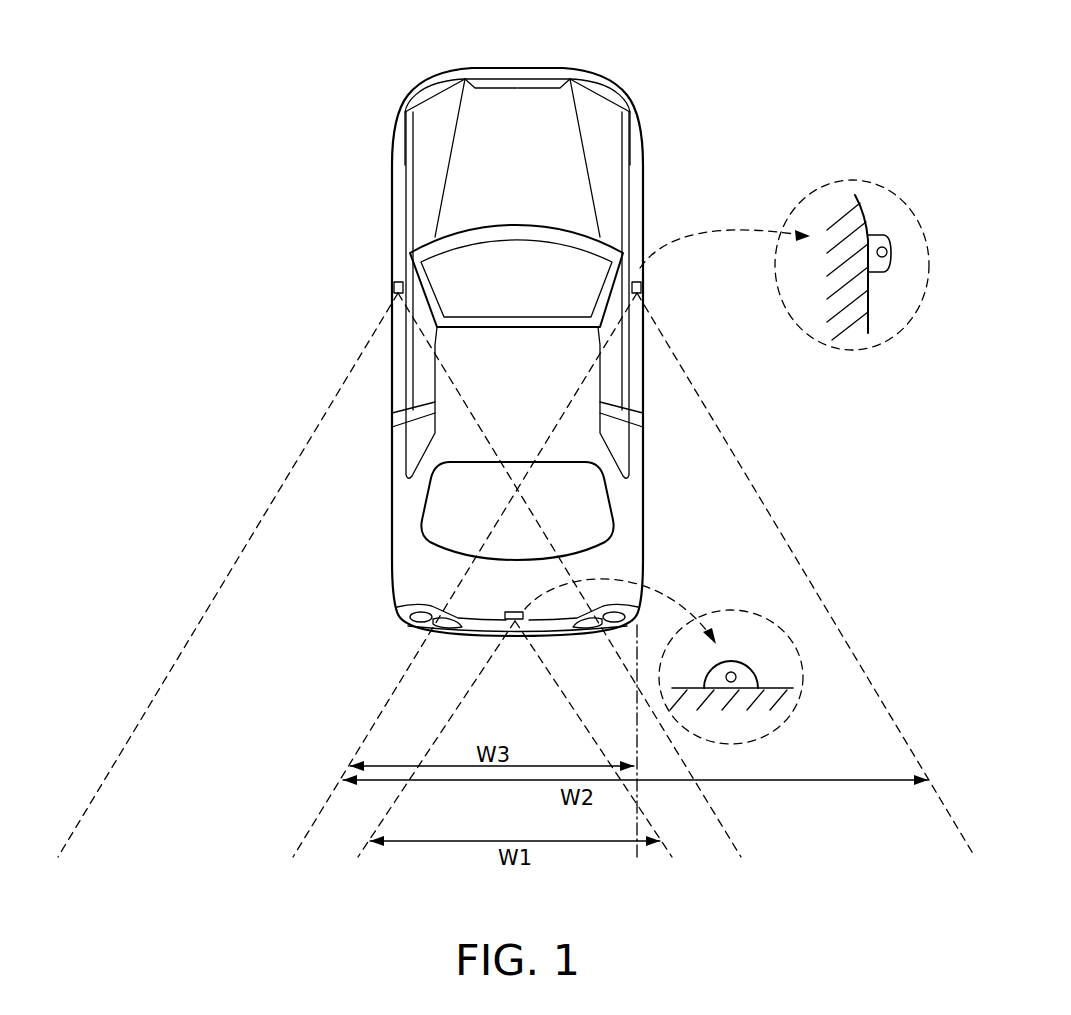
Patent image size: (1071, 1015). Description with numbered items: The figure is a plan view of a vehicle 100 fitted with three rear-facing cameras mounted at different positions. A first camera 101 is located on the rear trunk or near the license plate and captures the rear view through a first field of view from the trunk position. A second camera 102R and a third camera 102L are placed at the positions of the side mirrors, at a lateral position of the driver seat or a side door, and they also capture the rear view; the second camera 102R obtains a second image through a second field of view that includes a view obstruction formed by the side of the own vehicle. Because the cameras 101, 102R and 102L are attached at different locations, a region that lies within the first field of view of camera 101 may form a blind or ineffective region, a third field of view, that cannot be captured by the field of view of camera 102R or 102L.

The vehicle 100 is at (533, 67).
The first camera 101 is at (514, 622).
The third camera 102L is at (395, 288).
The second camera 102R is at (641, 288).